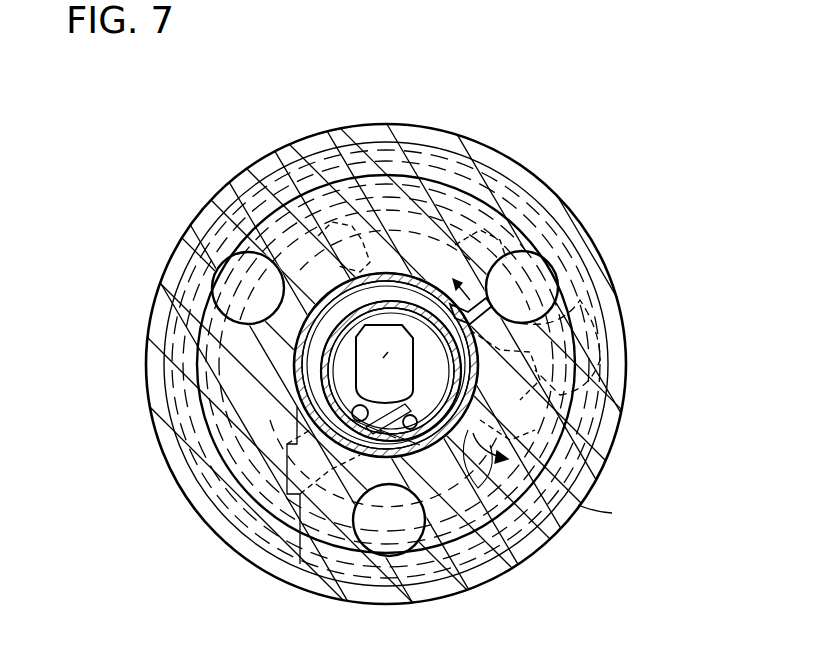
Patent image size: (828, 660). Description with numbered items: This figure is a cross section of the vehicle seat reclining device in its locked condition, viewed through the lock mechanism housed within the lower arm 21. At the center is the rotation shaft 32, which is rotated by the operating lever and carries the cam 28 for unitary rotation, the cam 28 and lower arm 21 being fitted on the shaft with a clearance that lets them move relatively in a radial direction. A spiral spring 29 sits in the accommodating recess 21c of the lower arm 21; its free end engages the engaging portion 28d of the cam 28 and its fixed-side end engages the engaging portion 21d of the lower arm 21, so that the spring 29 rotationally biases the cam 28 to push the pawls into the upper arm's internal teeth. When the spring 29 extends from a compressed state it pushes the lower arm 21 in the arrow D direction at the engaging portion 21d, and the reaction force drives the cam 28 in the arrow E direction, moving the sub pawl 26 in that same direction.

The lower arm 21 is at (605, 301).
The accommodating recess 21c is at (548, 367).
The engaging portion 21d is at (556, 345).
The sub pawl 26 is at (212, 231).
The cam 28 is at (490, 418).
The engaging portion 28d is at (353, 413).
The spring 29 is at (400, 276).
The rotation shaft 32 is at (367, 350).